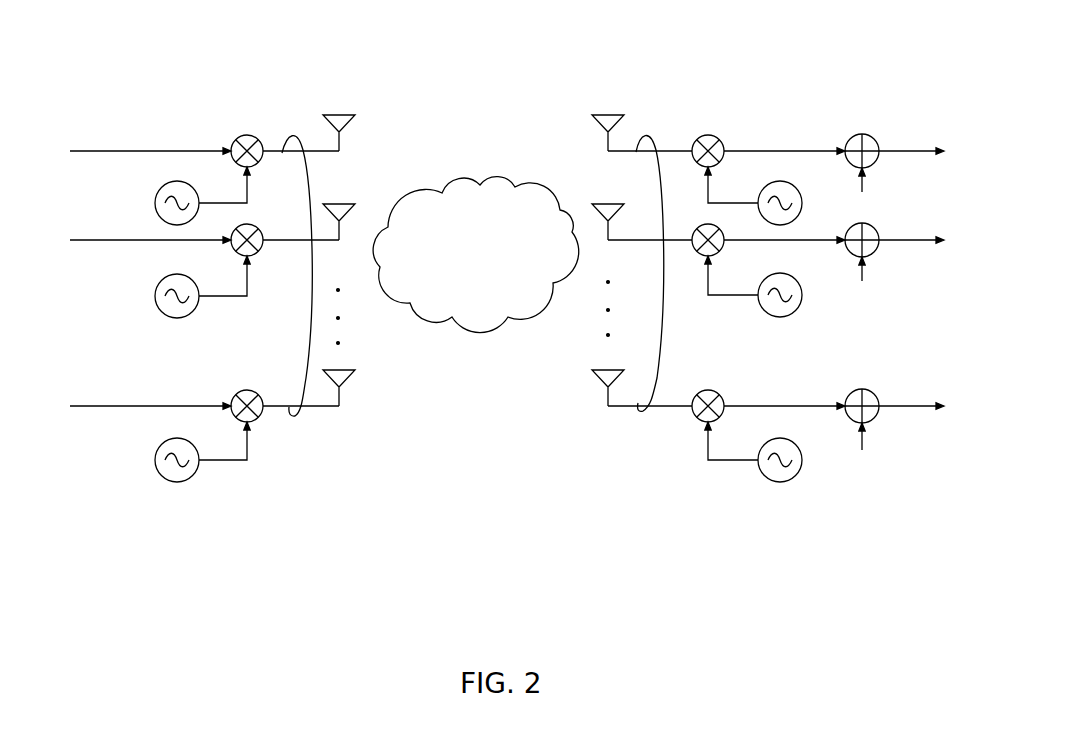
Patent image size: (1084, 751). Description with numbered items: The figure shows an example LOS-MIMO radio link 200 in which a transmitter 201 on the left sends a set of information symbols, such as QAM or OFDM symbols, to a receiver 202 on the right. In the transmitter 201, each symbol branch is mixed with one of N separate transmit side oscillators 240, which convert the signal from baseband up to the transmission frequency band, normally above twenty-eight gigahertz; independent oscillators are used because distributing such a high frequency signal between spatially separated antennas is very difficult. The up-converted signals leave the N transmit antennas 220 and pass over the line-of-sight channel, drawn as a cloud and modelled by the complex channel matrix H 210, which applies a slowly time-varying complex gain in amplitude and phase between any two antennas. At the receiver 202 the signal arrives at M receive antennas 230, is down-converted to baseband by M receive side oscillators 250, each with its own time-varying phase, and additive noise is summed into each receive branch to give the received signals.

The LOS-MIMO radio link 200 is at (162, 63).
The transmitter 201 is at (383, 573).
The receiver 202 is at (953, 573).
The complex channel matrix H 210 is at (476, 255).
The transmit antennas 220 is at (368, 407).
The receive antennas 230 is at (575, 407).
The transmit side oscillators 240 is at (215, 498).
The receive side oscillators 250 is at (805, 498).